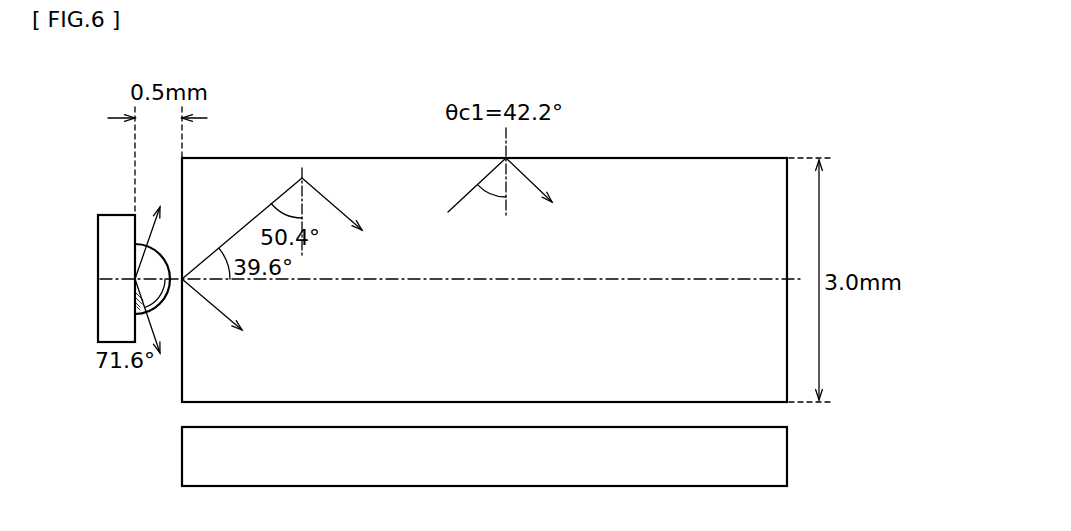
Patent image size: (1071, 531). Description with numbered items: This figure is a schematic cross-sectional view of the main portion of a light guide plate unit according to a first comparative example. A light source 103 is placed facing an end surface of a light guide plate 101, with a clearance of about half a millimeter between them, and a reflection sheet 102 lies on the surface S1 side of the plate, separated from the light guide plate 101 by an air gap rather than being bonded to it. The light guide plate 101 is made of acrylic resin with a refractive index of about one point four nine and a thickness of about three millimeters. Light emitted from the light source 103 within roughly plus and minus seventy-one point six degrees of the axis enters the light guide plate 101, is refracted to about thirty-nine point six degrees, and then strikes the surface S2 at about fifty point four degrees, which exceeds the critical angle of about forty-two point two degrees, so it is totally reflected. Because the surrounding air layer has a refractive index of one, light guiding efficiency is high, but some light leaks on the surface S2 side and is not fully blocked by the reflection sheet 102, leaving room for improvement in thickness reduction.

The light guide plate 101 is at (750, 140).
The reflection sheet 102 is at (780, 455).
The light source 103 is at (98, 205).
The surface S1 is at (658, 402).
The surface S2 is at (660, 158).